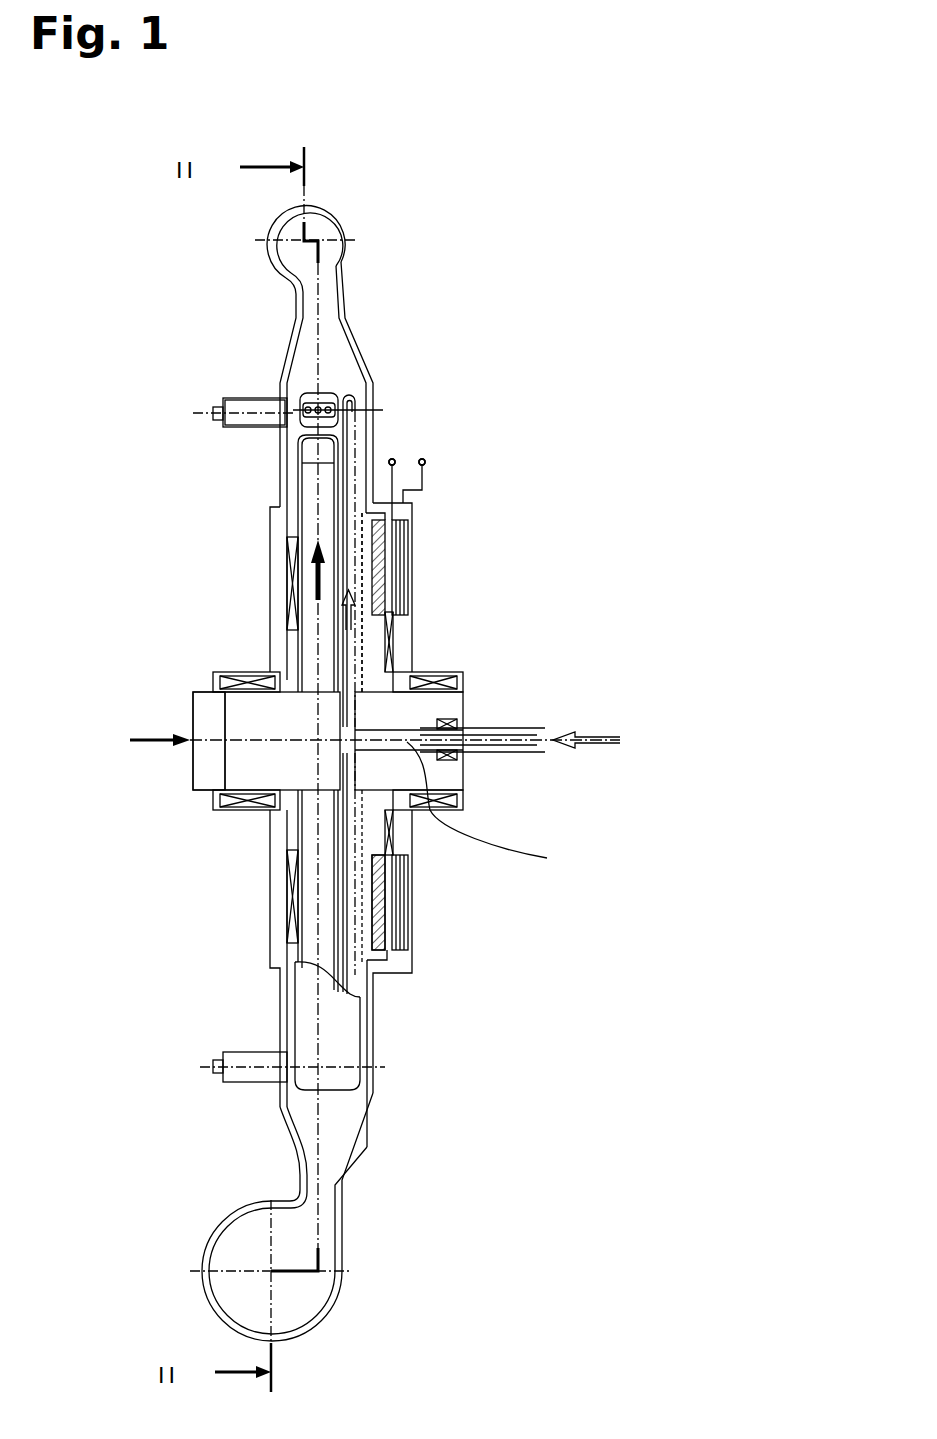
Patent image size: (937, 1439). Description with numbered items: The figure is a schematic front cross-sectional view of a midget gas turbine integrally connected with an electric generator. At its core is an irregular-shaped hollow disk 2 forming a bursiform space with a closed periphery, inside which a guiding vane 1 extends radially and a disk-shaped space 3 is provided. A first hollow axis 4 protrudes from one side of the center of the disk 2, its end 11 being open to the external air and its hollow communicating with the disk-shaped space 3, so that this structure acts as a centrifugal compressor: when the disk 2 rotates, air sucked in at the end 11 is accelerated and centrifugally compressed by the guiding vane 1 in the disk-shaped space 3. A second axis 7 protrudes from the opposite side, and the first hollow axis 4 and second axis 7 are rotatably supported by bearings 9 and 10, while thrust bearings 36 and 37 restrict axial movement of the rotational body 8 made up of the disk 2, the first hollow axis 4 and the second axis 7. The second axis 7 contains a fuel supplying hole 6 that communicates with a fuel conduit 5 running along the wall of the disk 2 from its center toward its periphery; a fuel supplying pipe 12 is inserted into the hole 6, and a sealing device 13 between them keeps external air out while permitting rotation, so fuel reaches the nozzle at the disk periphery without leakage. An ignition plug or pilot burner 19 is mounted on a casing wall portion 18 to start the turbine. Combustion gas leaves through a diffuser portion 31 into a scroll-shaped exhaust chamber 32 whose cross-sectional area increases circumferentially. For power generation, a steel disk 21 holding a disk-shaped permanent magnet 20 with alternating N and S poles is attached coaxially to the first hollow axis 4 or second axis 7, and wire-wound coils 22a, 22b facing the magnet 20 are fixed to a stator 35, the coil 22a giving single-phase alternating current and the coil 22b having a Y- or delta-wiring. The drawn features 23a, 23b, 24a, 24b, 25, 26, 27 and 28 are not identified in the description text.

The guiding vane 1 is at (307, 475).
The irregular-shaped hollow disk 2 is at (290, 496).
The disk-shaped space 3 is at (313, 523).
The first hollow axis 4 is at (247, 786).
The fuel conduit 5 is at (350, 455).
The fuel supplying hole 6 is at (407, 742).
The second axis 7 is at (450, 768).
The rotational body 8 is at (338, 1093).
The bearing 9 is at (227, 687).
The bearing 10 is at (450, 670).
The end 11 is at (193, 758).
The fuel supplying pipe 12 is at (505, 725).
The sealing device 13 is at (322, 415).
The casing wall portion 18 is at (283, 390).
The ignition plug or pilot burner 19 is at (233, 405).
The disk-shaped permanent magnet 20 is at (387, 537).
The steel disk 21 is at (372, 643).
The wire-wound coil 22a is at (395, 570).
The wire-wound coil 22b is at (400, 902).
The terminal 23a is at (392, 459).
The terminal 23b is at (392, 462).
The terminal 24a is at (425, 463).
The terminal 24b is at (422, 462).
The inlet block 25 is at (193, 738).
The flow arrow 26 is at (313, 568).
The flow arrow 27 is at (597, 742).
The flow arrow 28 is at (360, 597).
The diffuser portion 31 is at (313, 322).
The exhaust chamber 32 is at (330, 213).
The stator 35 is at (428, 676).
The thrust bearing 36 is at (283, 897).
The thrust bearing 37 is at (393, 827).